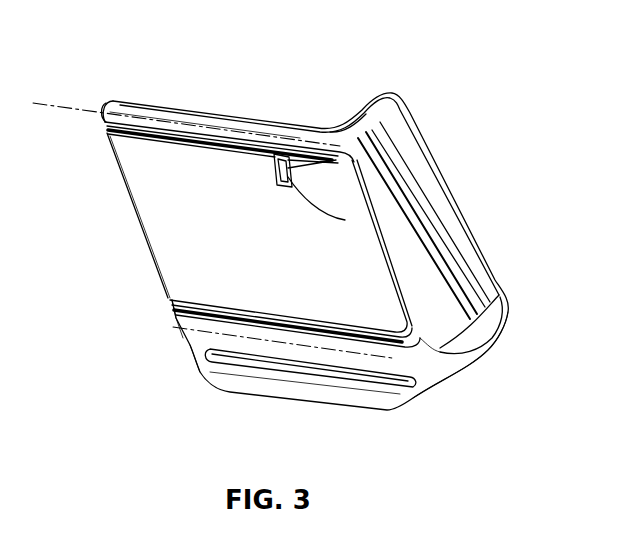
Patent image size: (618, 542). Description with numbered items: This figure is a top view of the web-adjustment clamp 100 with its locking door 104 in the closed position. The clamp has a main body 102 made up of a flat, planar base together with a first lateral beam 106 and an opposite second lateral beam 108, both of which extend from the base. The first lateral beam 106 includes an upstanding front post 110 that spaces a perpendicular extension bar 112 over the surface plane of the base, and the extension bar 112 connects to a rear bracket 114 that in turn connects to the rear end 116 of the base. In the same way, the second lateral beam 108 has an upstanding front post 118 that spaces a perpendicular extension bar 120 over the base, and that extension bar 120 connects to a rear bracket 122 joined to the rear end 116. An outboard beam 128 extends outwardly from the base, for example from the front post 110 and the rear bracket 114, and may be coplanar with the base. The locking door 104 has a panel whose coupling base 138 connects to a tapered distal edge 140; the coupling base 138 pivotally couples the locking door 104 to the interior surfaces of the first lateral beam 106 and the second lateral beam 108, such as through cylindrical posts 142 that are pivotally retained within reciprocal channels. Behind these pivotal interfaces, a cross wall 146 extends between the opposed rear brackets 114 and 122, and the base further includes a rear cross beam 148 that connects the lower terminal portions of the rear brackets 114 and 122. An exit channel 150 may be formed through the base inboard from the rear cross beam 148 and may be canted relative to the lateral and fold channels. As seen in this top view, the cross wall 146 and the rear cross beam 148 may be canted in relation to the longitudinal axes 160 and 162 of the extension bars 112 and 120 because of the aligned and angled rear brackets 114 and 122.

The web-adjustment clamp 100 is at (103, 70).
The main body 102 is at (417, 413).
The locking door 104 is at (160, 220).
The first lateral beam 106 is at (172, 313).
The second lateral beam 108 is at (156, 113).
The front post 110 is at (185, 338).
The extension bar 112 is at (200, 358).
The rear bracket 114 is at (487, 353).
The rear end 116 is at (503, 330).
The front post 118 is at (100, 117).
The extension bar 120 is at (203, 112).
The rear bracket 122 is at (357, 112).
The outboard beam 128 is at (257, 382).
The coupling base 138 is at (345, 220).
The tapered distal edge 140 is at (127, 207).
The cylindrical posts 142 is at (338, 163).
The cross wall 146 is at (457, 292).
The rear cross beam 148 is at (442, 175).
The exit channel 150 is at (393, 158).
The longitudinal axis 160 is at (280, 342).
The longitudinal axis 162 is at (58, 108).